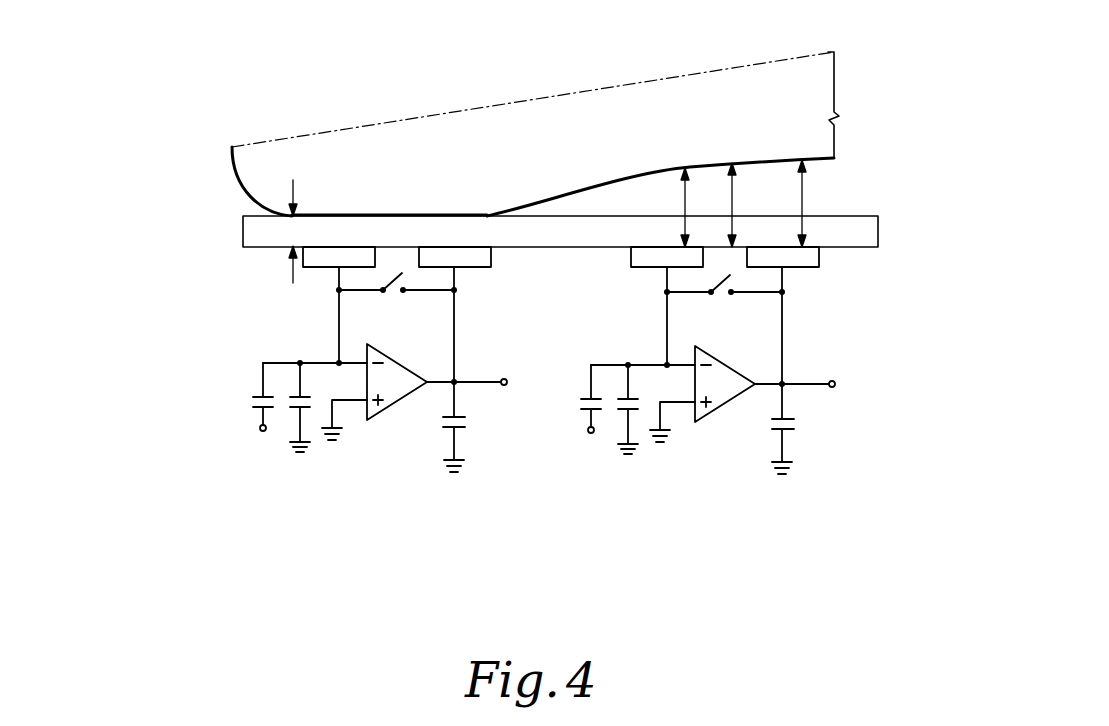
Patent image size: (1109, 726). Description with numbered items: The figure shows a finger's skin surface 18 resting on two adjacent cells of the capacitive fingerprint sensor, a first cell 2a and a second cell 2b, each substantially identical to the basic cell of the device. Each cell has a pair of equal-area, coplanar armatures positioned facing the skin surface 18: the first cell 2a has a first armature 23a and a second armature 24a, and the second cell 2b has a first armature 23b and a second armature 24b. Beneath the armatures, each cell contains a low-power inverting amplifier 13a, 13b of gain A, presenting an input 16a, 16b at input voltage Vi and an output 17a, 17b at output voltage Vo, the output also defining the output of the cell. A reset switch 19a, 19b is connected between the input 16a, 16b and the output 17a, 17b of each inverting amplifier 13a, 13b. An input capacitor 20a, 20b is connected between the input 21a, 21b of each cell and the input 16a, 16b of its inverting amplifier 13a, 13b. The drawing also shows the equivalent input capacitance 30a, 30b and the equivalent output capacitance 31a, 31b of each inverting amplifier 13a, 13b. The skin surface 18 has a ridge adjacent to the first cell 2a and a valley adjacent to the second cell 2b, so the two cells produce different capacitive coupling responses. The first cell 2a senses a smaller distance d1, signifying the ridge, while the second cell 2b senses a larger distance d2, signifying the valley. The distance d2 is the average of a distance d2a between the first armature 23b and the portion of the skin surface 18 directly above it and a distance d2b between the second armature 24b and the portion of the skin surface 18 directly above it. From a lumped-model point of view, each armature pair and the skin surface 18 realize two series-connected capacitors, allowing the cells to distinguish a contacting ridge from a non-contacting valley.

The skin surface 18 is at (398, 177).
The distance d1 is at (292, 276).
The distance d2 is at (733, 192).
The distance d2a is at (803, 192).
The distance d2b is at (684, 202).
The second armature 24a is at (322, 258).
The first armature 23a is at (475, 262).
The second armature 24b is at (655, 268).
The first armature 23b is at (803, 262).
The first cell 2a is at (336, 533).
The second cell 2b is at (665, 536).
The input 16a is at (300, 362).
The input 16b is at (652, 364).
The reset switch 19a is at (393, 289).
The reset switch 19b is at (723, 293).
The inverting amplifier 13a is at (398, 393).
The inverting amplifier 13b is at (732, 396).
The input capacitor 20a is at (258, 395).
The input capacitor 20b is at (585, 398).
The input 21a is at (263, 432).
The input 21b is at (592, 434).
The equivalent input capacitance 30a is at (302, 407).
The equivalent input capacitance 30b is at (637, 413).
The equivalent output capacitance 31a is at (463, 430).
The equivalent output capacitance 31b is at (792, 433).
The output 17a is at (483, 380).
The output 17b is at (805, 382).